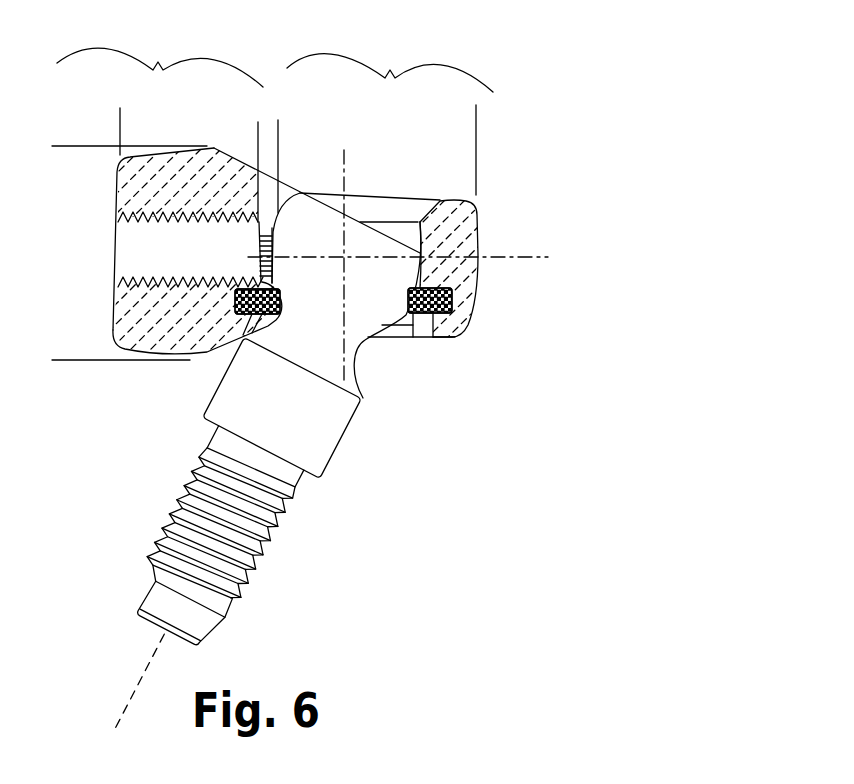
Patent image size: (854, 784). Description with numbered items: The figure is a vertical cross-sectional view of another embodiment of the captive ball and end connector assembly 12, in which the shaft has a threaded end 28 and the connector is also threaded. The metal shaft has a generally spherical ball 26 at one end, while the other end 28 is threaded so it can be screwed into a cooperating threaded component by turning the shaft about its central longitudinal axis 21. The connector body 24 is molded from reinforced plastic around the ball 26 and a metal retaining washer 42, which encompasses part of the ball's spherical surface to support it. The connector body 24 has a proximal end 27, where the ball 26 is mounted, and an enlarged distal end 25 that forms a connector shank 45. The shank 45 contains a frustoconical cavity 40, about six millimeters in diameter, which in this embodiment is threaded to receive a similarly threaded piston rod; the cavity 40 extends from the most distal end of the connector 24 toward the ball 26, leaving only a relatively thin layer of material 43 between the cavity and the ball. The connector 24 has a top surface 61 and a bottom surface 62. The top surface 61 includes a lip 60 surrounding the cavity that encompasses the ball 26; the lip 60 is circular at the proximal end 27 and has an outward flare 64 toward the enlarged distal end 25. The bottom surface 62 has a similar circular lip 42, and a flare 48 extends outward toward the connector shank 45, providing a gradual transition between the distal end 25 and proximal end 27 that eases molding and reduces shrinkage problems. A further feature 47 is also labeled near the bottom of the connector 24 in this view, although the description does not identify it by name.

The captive ball and end connector assembly 12 is at (510, 305).
The central longitudinal axis 21 is at (130, 703).
The connector body 24 is at (470, 243).
The enlarged distal end 25 is at (157, 195).
The ball 26 is at (323, 249).
The proximal end 27 is at (390, 112).
The threaded end 28 is at (262, 578).
The frustoconical cavity 40 is at (140, 258).
The retaining washer 42 is at (401, 347).
The thin layer of material 43 is at (332, 122).
The connector shank 45 is at (150, 172).
The recess 47 is at (446, 370).
The flare 48 is at (217, 343).
The lip 60 is at (418, 221).
The top surface 61 is at (392, 145).
The bottom surface 62 is at (390, 430).
The outward flare 64 is at (308, 161).